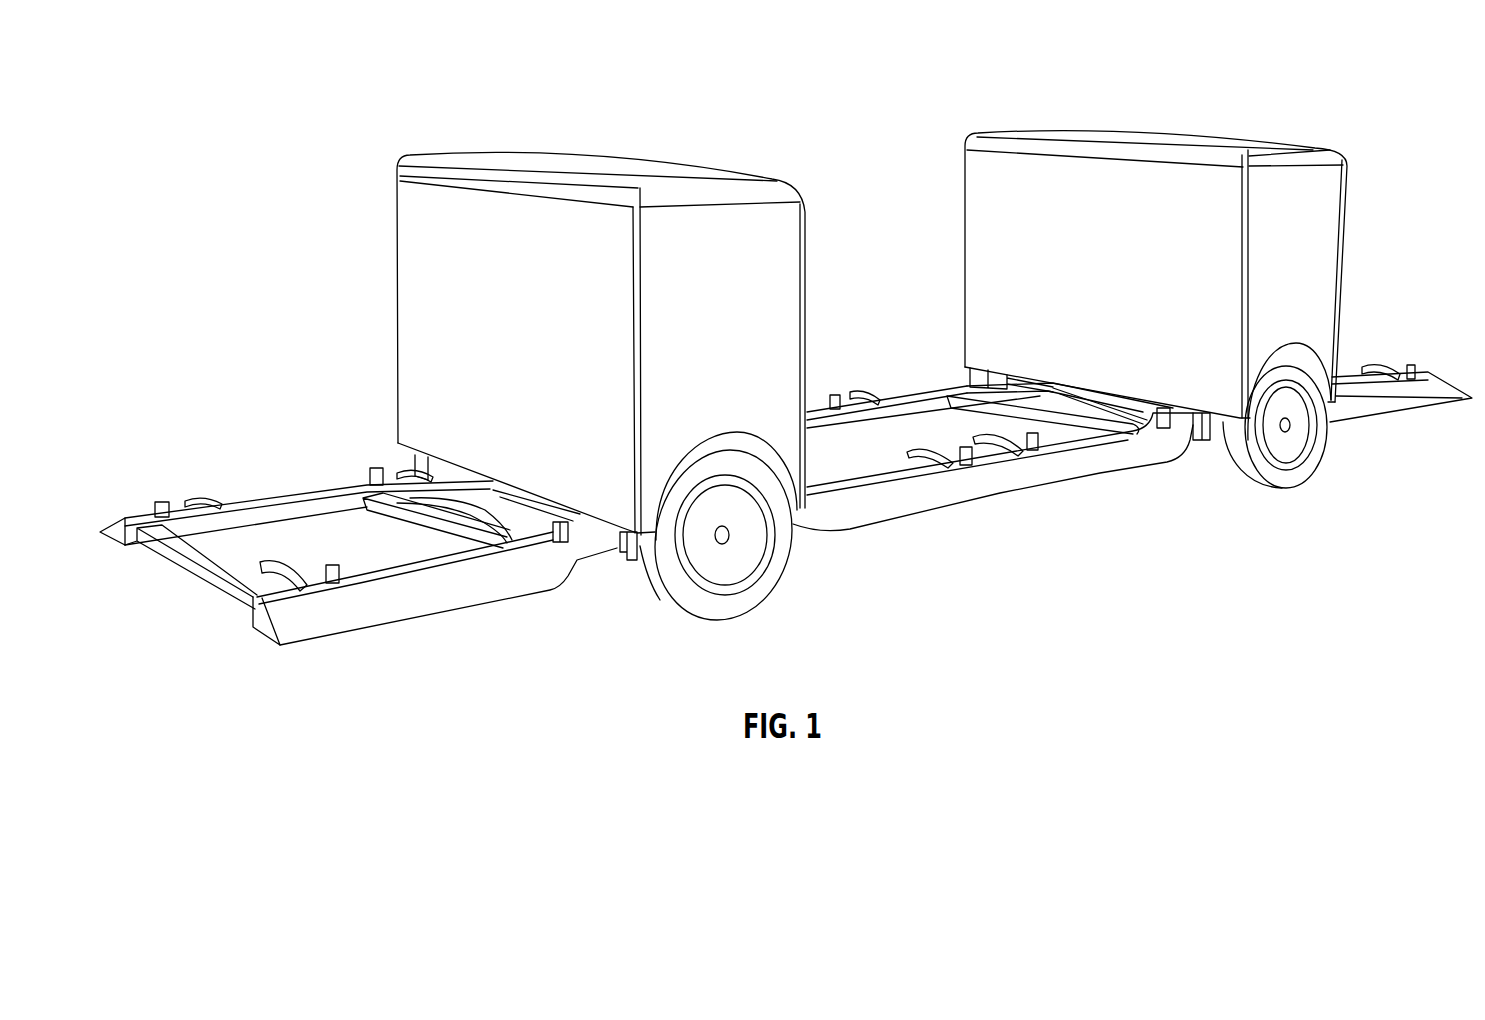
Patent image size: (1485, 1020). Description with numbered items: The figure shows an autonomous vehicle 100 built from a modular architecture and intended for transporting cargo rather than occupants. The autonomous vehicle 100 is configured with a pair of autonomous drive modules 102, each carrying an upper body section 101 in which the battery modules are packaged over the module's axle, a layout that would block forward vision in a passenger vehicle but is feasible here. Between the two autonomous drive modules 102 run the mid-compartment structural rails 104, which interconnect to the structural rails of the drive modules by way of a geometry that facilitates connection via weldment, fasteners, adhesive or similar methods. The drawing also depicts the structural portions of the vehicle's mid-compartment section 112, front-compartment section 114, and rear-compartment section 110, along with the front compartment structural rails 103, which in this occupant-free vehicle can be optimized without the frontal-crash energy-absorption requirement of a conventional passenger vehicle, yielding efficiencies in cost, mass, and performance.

The autonomous vehicle 100 is at (211, 93).
The upper body section 101 is at (772, 239).
The autonomous drive module 102 is at (579, 156).
The front compartment structural rails 103 is at (423, 602).
The mid-compartment structural rails 104 is at (1073, 472).
The rear-compartment section 110 is at (1403, 400).
The mid-compartment section 112 is at (906, 394).
The front-compartment section 114 is at (249, 496).